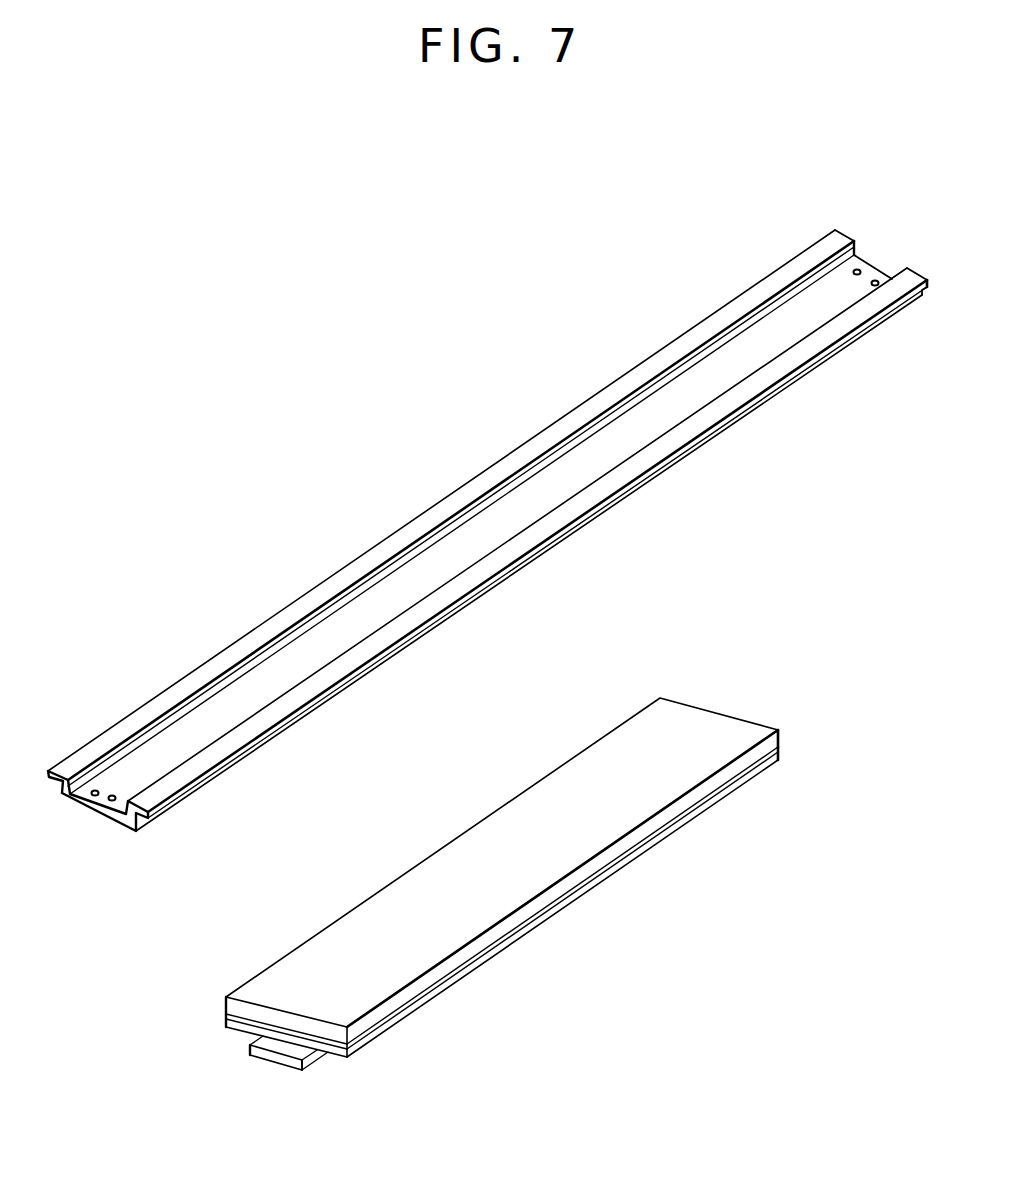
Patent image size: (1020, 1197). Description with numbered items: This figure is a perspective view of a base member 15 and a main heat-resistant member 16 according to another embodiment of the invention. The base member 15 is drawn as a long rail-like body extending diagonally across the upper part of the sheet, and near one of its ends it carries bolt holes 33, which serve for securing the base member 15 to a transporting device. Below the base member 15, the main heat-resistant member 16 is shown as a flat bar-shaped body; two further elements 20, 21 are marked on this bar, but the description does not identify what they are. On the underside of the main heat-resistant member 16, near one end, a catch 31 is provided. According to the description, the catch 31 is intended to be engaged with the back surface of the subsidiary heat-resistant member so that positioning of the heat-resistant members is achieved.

The base member 15 is at (405, 526).
The bolt holes 33 is at (865, 270).
The main heat-resistant member 16 is at (502, 877).
The upper plate 20 is at (573, 878).
The lower plate 21 is at (540, 922).
The catch 31 is at (291, 1062).